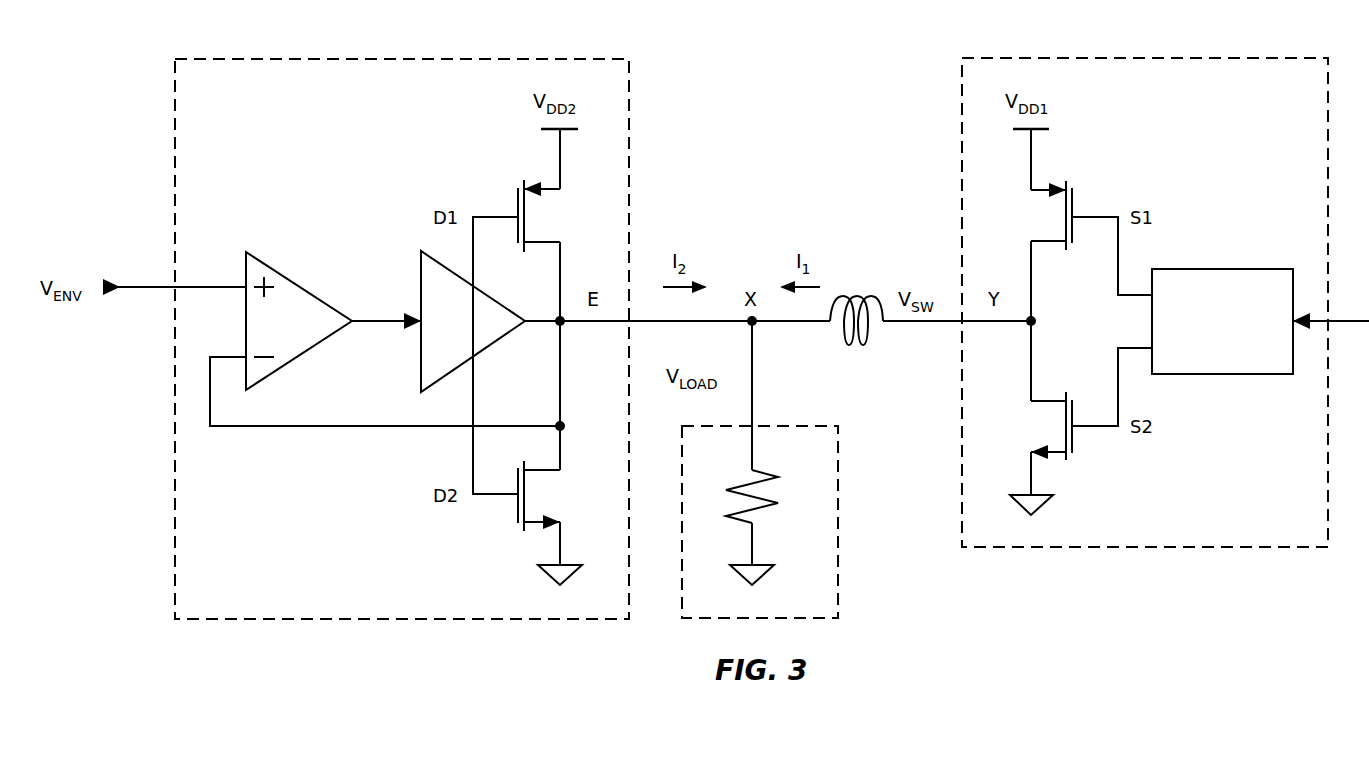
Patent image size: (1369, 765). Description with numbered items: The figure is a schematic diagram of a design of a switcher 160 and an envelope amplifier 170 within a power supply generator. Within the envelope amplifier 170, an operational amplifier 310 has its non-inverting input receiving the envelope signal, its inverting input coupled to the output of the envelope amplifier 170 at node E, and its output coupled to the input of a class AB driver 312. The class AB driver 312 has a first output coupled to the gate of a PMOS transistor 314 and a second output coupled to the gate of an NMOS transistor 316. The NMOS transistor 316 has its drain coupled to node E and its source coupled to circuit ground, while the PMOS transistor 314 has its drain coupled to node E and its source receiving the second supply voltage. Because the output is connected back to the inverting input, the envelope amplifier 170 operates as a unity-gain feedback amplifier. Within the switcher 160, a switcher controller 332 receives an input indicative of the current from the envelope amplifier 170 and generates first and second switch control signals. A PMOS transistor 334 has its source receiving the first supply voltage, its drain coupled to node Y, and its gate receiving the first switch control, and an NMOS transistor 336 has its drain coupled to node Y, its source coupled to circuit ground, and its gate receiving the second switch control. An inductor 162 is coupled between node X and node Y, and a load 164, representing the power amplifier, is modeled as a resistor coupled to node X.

The envelope amplifier 170 is at (412, 45).
The operational amplifier 310 is at (296, 287).
The class AB driver 312 is at (421, 288).
The PMOS transistor 314 is at (518, 198).
The NMOS transistor 316 is at (518, 517).
The inductor 162 is at (858, 294).
The load 164 is at (760, 472).
The switcher 160 is at (1153, 45).
The PMOS transistor 334 is at (1074, 198).
The NMOS transistor 336 is at (1072, 445).
The switcher controller 332 is at (1230, 253).